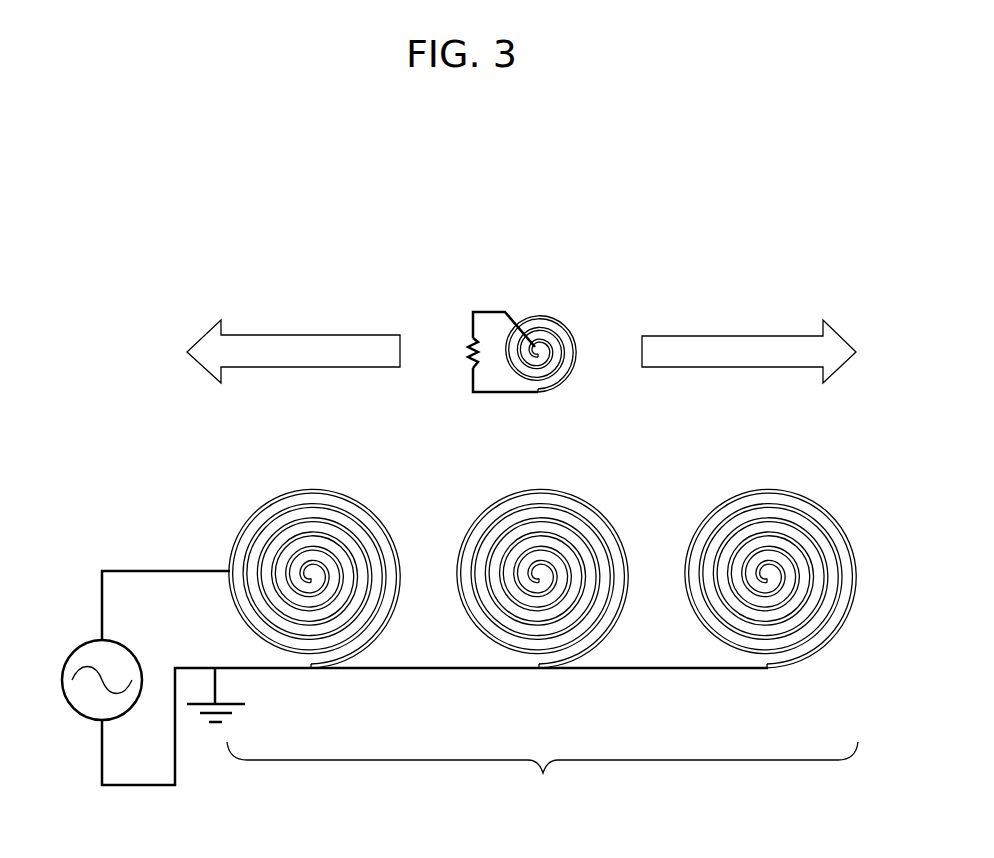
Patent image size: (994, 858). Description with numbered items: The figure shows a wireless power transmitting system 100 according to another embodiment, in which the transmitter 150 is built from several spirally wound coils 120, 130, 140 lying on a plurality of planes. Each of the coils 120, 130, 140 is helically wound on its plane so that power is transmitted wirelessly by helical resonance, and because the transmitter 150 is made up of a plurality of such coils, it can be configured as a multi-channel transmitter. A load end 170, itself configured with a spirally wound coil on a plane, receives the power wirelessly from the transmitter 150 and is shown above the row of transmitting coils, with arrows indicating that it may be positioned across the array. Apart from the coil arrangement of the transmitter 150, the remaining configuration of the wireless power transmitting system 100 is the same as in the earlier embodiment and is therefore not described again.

The wireless power transmitting system 100 is at (498, 217).
The spirally wound coil 120 is at (226, 516).
The spirally wound coil 130 is at (452, 516).
The spirally wound coil 140 is at (680, 516).
The transmitter 150 is at (542, 774).
The load end 170 is at (592, 305).